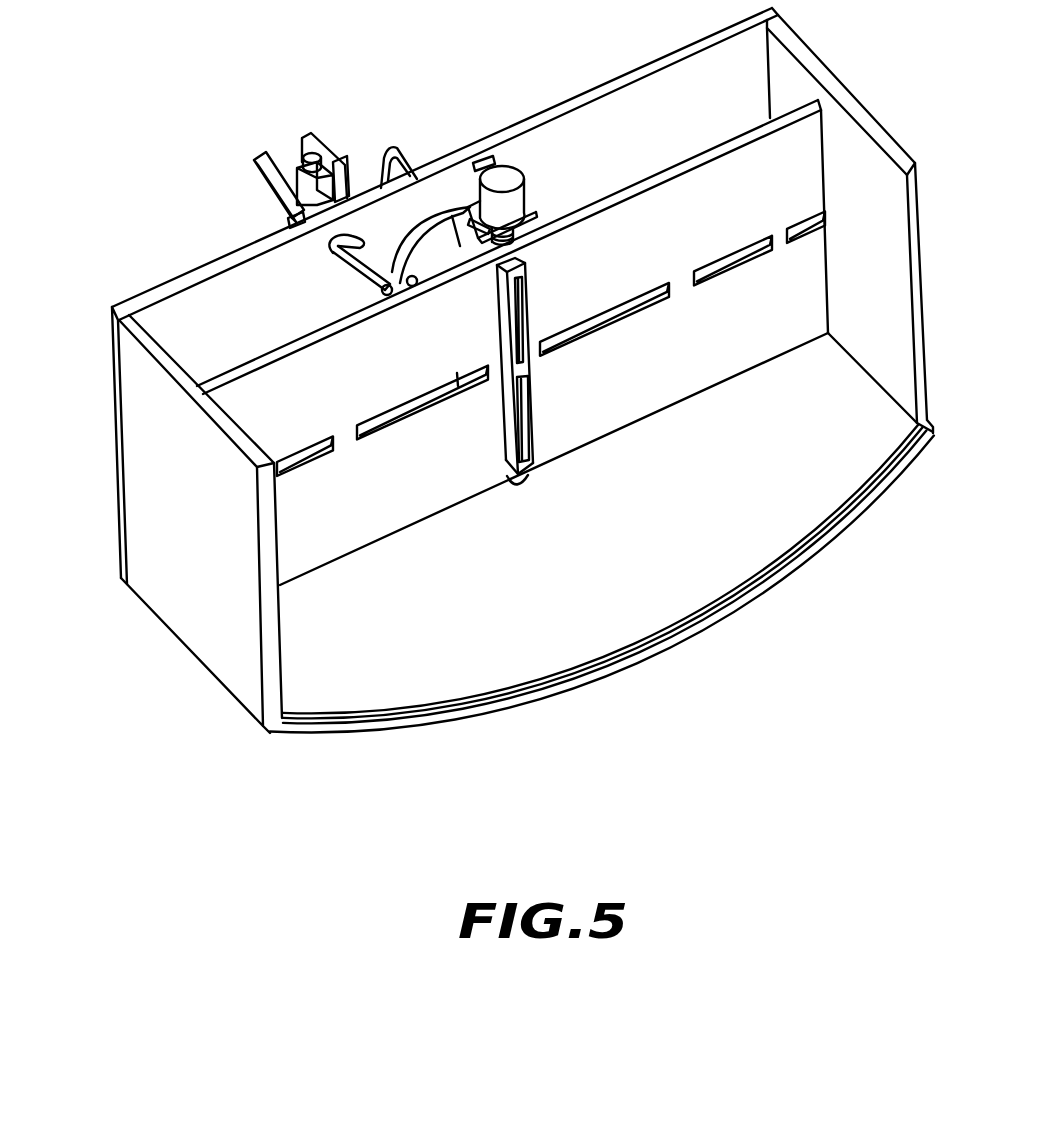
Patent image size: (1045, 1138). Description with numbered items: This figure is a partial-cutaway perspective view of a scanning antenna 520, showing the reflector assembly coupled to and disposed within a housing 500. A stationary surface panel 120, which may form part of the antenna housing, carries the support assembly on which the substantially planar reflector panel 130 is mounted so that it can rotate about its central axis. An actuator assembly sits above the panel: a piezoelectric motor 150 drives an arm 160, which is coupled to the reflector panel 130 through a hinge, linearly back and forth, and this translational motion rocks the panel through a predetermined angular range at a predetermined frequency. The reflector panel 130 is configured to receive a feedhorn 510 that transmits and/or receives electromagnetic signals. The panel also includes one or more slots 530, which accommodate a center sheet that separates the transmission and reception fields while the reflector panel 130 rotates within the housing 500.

The stationary surface panel 120 is at (605, 116).
The reflector panel 130 is at (512, 434).
The piezoelectric motor 150 is at (310, 138).
The arm 160 is at (262, 173).
The housing 500 is at (186, 630).
The feedhorn 510 is at (532, 422).
The scanning antenna 520 is at (122, 122).
The slot 530 is at (407, 438).